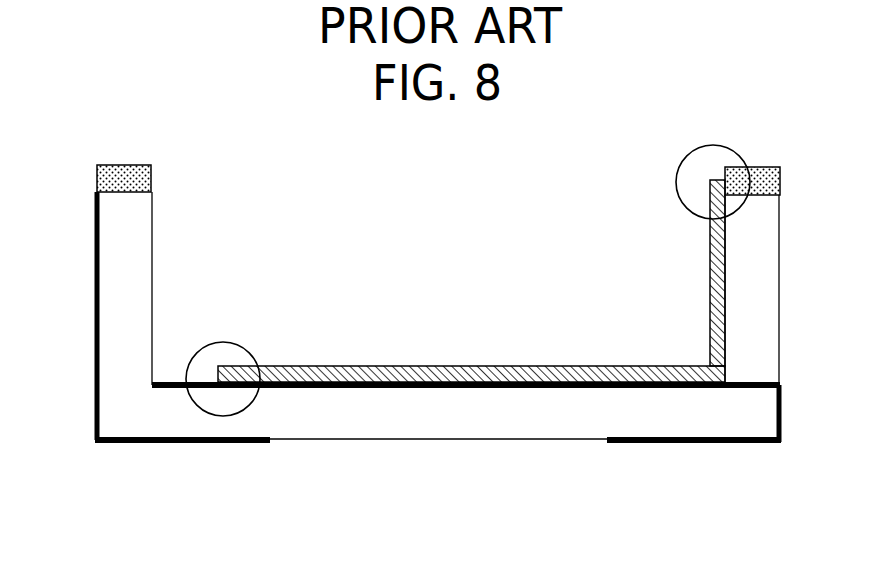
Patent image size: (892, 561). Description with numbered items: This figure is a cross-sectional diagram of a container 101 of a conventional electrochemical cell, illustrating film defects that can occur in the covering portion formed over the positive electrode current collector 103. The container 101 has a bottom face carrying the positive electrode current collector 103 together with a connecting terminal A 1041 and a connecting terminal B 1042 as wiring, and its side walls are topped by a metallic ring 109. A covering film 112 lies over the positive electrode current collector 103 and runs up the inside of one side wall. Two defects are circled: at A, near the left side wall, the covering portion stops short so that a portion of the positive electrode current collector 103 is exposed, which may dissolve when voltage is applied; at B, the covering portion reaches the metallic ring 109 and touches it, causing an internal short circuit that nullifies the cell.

The container 101 is at (129, 393).
The positive electrode current collector 103 is at (448, 388).
The metallic ring 109 is at (138, 173).
The metal plate / lid member 112 is at (510, 367).
The connecting terminal A 1041 is at (677, 443).
The connecting terminal B 1042 is at (242, 443).
The film defect region A is at (190, 363).
The film defect region B is at (733, 213).